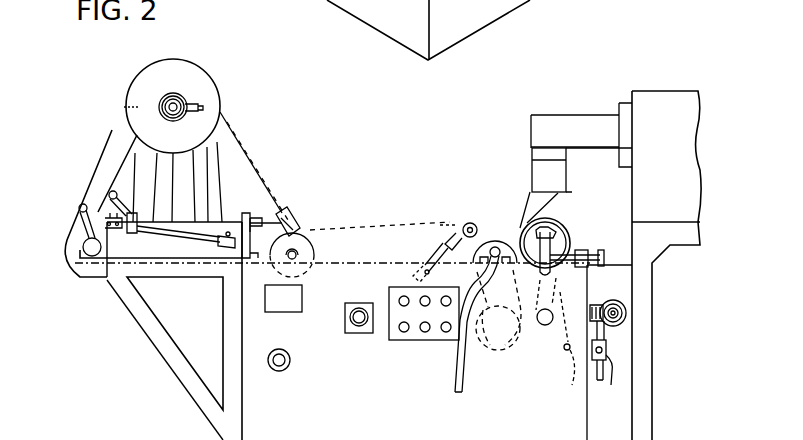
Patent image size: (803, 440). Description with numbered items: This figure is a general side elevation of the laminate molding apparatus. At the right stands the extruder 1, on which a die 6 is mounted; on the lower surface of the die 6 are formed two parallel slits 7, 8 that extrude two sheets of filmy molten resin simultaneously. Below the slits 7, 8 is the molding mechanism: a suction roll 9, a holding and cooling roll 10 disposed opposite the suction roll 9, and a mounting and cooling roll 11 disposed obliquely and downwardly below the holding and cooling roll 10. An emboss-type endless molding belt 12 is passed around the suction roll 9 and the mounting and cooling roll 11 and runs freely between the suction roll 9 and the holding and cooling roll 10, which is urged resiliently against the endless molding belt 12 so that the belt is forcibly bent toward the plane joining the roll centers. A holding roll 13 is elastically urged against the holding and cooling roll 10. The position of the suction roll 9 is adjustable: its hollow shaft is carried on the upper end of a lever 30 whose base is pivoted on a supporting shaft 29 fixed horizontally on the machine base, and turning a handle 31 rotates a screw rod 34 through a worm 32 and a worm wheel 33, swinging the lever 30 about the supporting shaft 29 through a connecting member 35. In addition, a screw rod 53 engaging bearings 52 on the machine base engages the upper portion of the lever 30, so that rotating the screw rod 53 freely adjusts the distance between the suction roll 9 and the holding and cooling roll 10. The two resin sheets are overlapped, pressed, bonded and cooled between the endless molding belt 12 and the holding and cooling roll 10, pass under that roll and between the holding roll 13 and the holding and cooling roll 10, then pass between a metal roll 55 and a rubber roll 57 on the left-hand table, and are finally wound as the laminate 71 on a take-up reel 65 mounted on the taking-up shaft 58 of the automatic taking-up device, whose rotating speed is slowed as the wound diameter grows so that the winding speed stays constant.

The extruder 1 is at (655, 105).
The die 6 is at (531, 158).
The slit 7 is at (566, 193).
The slit 8 is at (531, 190).
The suction roll 9 is at (566, 228).
The holding and cooling roll 10 is at (490, 232).
The mounting and cooling roll 11 is at (492, 345).
The endless molding belt 12 is at (527, 347).
The holding roll 13 is at (463, 226).
The supporting shaft 29 is at (572, 372).
The lever 30 is at (560, 343).
The handle 31 is at (625, 300).
The worm 32 is at (620, 321).
The worm wheel 33 is at (597, 305).
The screw rod 34 is at (599, 382).
The connecting member 35 is at (612, 382).
The bearings 52 is at (586, 250).
The screw rod 53 is at (601, 254).
The metal roll 55 is at (316, 253).
The rubber roll 57 is at (303, 214).
The taking-up shaft 58 is at (190, 92).
The take-up reel 65 is at (204, 108).
The laminate 71 is at (270, 165).